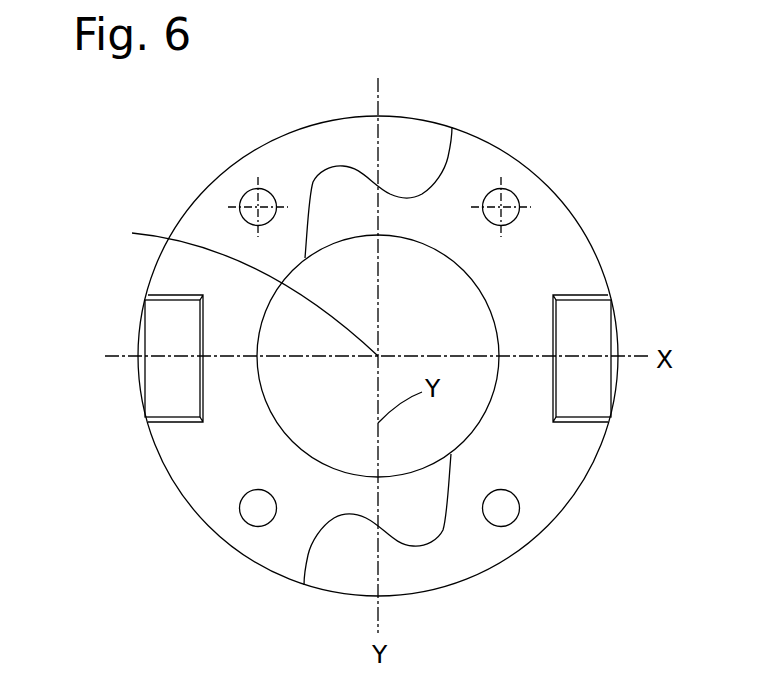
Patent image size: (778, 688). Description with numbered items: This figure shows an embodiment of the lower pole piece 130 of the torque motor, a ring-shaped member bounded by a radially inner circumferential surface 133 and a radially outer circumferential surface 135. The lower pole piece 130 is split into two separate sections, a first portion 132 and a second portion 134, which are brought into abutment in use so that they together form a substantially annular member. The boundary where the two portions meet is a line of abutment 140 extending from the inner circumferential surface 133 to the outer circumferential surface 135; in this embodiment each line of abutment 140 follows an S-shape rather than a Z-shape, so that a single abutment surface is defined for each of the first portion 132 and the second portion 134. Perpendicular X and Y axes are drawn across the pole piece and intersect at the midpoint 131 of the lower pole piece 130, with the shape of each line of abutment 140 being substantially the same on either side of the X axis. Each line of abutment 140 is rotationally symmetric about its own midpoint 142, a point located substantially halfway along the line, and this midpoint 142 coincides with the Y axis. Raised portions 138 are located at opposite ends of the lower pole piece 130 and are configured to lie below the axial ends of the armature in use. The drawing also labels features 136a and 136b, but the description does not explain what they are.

The lower pole piece 130 is at (130, 163).
The midpoint of the lower pole piece 131 is at (232, 289).
The first portion 132 is at (203, 472).
The radially inner circumferential surface 133 is at (443, 254).
The second portion 134 is at (557, 490).
The radially outer circumferential surface 135 is at (517, 157).
The first fastening holes 136a is at (250, 198).
The second fastening holes 136b is at (513, 197).
The raised portions 138 is at (162, 330).
The lines of abutment 140 is at (342, 165).
The midpoint of the line of abutment 142 is at (380, 180).